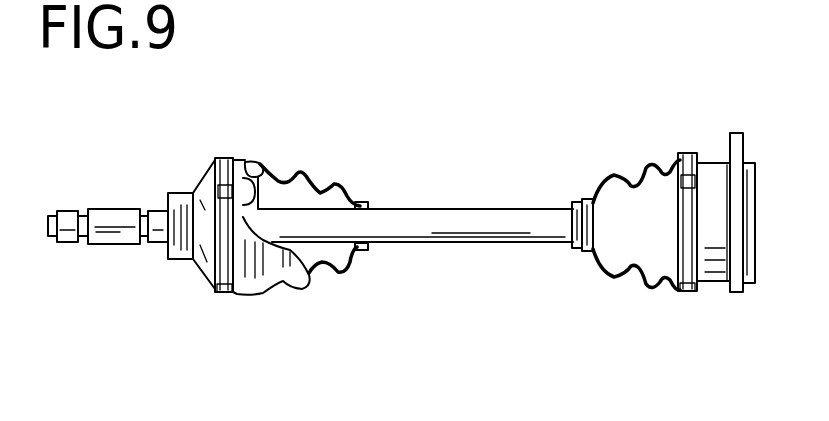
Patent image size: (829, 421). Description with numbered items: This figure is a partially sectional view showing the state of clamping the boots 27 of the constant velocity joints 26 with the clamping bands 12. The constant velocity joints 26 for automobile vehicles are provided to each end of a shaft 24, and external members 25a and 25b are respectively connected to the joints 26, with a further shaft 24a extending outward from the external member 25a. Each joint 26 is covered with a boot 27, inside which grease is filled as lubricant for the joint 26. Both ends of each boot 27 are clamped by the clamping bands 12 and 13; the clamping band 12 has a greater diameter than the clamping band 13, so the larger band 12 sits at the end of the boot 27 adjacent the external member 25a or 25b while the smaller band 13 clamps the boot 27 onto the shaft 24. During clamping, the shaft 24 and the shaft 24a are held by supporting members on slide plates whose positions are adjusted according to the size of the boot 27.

The clamping band 12 is at (224, 160).
The clamping band 13 is at (359, 250).
The shaft 24 is at (458, 231).
The shaft 24a is at (110, 244).
The external member 25a is at (195, 263).
The external member 25b is at (708, 293).
The constant velocity joint 26 is at (273, 177).
The boot 27 is at (332, 178).